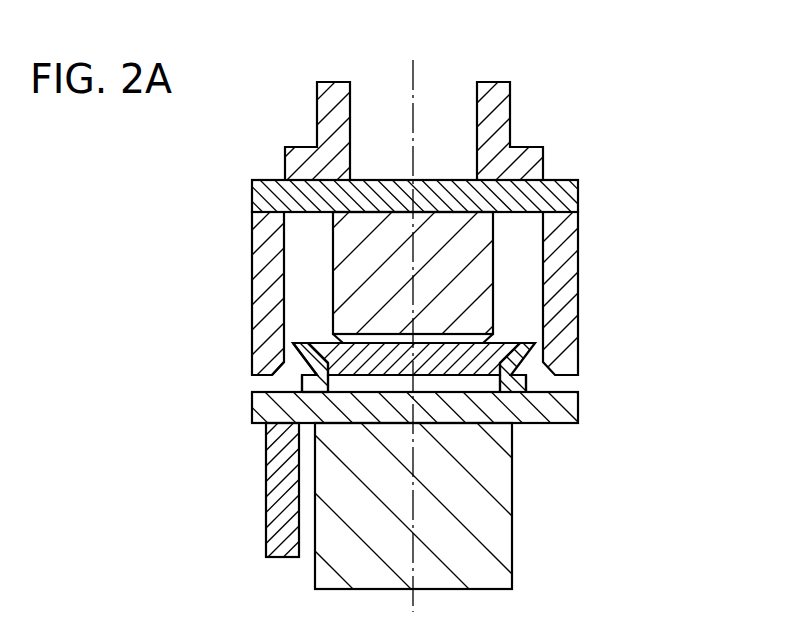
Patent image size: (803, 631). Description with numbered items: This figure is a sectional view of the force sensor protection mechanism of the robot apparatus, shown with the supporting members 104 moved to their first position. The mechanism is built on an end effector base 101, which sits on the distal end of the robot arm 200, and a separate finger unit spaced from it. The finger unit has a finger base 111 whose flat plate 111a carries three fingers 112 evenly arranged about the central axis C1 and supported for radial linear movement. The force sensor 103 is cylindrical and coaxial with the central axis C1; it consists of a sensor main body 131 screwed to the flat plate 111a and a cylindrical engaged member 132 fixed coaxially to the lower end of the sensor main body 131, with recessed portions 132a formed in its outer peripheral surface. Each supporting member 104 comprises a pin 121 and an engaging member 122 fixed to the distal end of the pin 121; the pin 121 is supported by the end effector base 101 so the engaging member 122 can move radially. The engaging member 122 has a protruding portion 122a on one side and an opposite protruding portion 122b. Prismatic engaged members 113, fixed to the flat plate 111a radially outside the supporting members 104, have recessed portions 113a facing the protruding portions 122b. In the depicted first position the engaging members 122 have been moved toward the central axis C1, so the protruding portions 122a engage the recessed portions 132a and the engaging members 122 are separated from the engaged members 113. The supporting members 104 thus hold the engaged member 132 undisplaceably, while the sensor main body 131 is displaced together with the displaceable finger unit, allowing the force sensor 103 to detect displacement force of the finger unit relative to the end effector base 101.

The central axis C1 is at (413, 91).
The end effector base 101 is at (576, 410).
The force sensor 103 is at (362, 291).
The supporting member 104 is at (464, 411).
The finger base 111 is at (577, 183).
The flat plate 111a is at (523, 213).
The finger 112 is at (324, 90).
The engaged member 113 is at (563, 268).
The recessed portion 113a is at (281, 368).
The pin 121 is at (525, 382).
The engaging member 122 is at (520, 356).
The protruding portion 122a is at (340, 392).
The protruding portion 122b is at (278, 373).
The sensor main body 131 is at (357, 253).
The engaged member 132 is at (373, 347).
The recessed portion 132a is at (305, 348).
The robot arm 200 is at (503, 492).